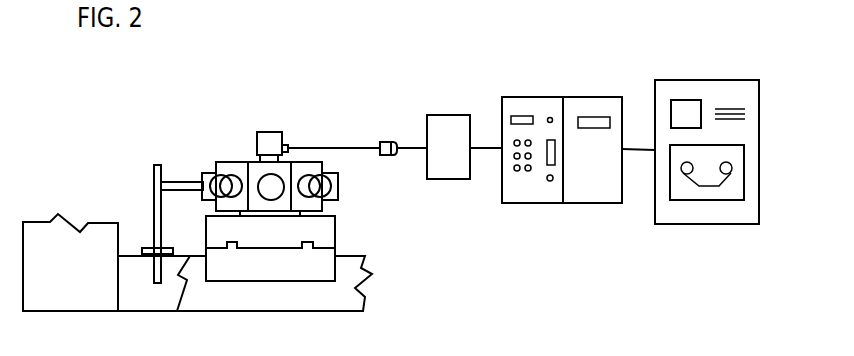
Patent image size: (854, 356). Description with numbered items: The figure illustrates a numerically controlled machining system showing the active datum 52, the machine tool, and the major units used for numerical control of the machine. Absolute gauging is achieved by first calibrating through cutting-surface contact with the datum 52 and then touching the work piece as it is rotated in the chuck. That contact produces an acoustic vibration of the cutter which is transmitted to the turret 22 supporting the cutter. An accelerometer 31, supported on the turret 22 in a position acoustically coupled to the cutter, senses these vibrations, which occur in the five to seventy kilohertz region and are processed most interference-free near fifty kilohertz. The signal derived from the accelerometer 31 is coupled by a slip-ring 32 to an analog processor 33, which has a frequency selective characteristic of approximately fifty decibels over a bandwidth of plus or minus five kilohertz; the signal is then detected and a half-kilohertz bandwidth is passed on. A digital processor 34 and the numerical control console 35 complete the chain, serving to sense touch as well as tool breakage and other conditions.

The turret 22 is at (216, 162).
The accelerometer 31 is at (269, 131).
The slip-ring 32 is at (385, 157).
The analog processor 33 is at (450, 114).
The digital processor 34 is at (548, 206).
The numerical control console 35 is at (709, 226).
The datum 52 is at (152, 190).